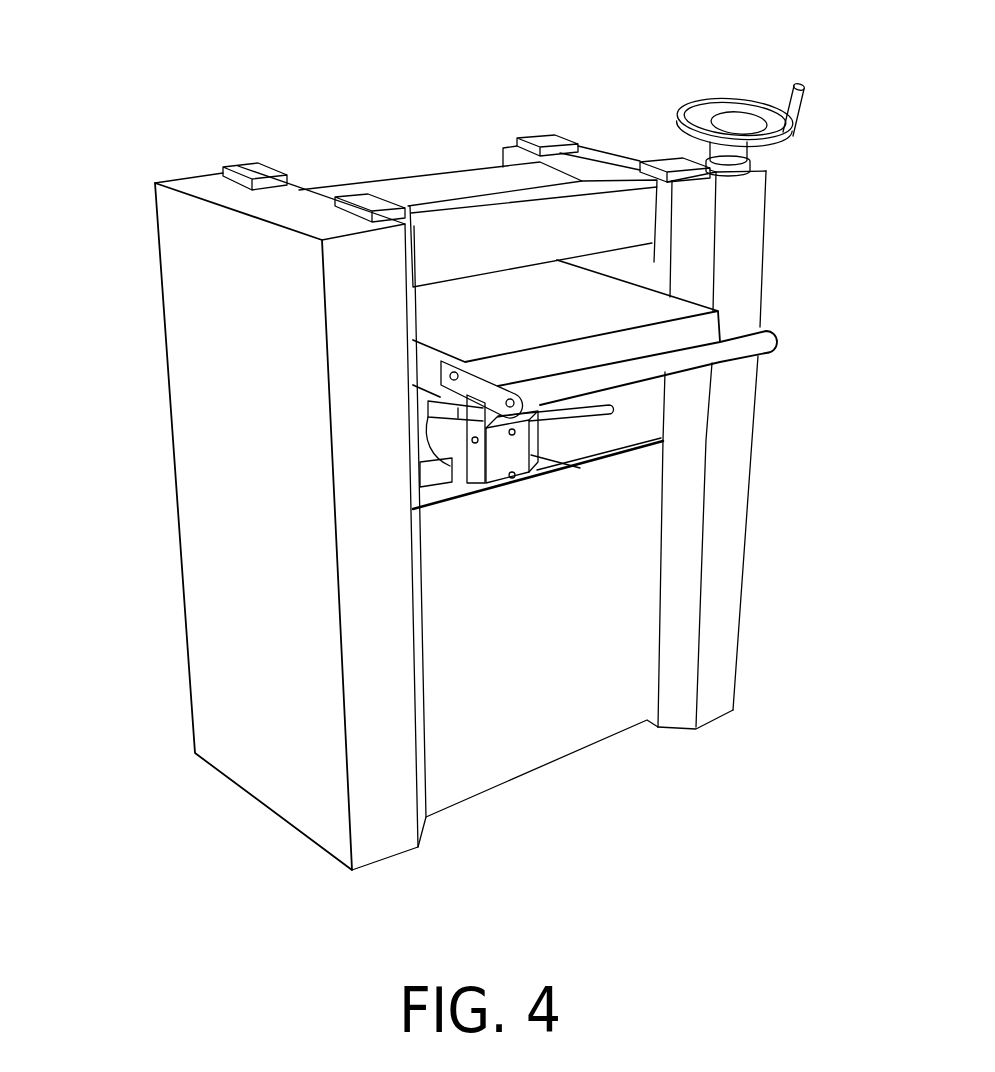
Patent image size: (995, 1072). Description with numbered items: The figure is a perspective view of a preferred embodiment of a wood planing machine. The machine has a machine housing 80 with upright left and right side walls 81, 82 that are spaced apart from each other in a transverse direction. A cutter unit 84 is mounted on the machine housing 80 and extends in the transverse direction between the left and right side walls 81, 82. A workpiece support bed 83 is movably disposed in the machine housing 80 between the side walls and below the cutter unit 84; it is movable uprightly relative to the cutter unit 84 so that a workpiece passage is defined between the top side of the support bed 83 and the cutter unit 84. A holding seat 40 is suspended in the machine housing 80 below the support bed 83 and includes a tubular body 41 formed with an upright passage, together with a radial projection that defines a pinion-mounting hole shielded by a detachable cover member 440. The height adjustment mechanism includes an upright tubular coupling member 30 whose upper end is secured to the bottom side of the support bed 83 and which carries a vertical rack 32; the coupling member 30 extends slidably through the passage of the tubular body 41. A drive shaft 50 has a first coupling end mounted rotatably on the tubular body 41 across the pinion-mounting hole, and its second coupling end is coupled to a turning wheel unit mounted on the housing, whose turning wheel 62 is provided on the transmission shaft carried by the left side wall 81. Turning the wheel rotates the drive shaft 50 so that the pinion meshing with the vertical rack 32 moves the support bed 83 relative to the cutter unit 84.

The machine housing 80 is at (768, 526).
The left side wall 81 is at (660, 258).
The right side wall 82 is at (302, 188).
The workpiece support bed 83 is at (640, 313).
The cutter unit 84 is at (438, 236).
The turning wheel 62 is at (700, 112).
The coupling member 30 is at (455, 452).
The vertical rack 32 is at (418, 499).
The holding seat 40 is at (432, 496).
The tubular body 41 is at (443, 432).
The cover member 440 is at (523, 463).
The drive shaft 50 is at (605, 431).